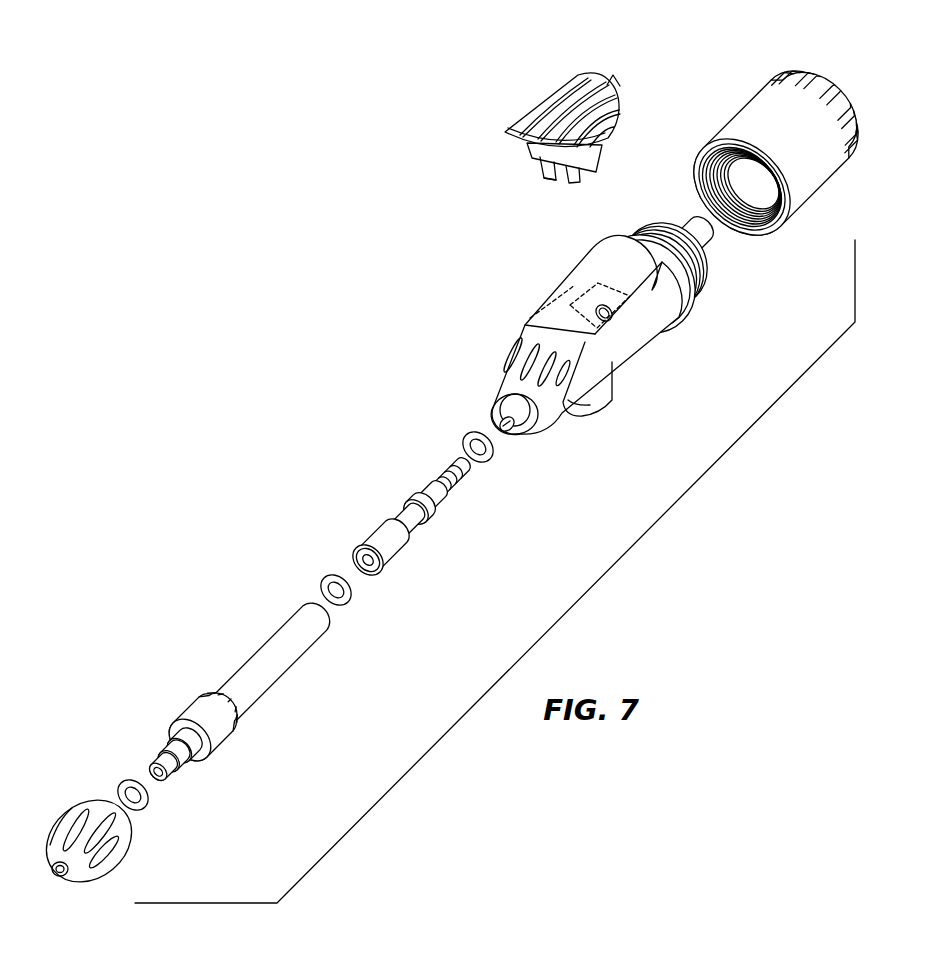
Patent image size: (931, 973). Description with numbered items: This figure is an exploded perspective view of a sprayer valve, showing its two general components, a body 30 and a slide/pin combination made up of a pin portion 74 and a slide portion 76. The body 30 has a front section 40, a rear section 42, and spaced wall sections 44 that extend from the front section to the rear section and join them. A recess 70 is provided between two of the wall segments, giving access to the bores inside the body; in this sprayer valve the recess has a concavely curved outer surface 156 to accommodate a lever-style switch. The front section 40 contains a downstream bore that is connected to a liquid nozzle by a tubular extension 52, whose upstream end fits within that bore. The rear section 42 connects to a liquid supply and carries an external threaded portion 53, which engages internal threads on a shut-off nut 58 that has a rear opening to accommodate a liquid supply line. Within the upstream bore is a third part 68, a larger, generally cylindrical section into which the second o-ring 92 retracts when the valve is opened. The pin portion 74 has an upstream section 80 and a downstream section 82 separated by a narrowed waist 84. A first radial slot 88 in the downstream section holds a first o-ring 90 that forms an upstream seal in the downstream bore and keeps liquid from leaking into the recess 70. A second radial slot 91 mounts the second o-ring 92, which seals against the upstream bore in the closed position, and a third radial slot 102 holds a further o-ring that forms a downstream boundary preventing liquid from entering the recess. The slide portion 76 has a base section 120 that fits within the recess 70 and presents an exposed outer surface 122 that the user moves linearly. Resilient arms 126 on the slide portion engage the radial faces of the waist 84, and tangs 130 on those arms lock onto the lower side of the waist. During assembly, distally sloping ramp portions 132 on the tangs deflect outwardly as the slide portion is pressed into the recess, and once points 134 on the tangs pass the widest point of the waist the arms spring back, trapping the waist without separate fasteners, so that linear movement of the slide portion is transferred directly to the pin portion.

The body 30 is at (598, 338).
The front section 40 is at (553, 422).
The rear section 42 is at (690, 308).
The spaced wall sections 44 is at (600, 325).
The tubular extension 52 is at (288, 660).
The threaded portion 53 is at (701, 272).
The shut-off nut 58 is at (803, 187).
The third part of the upstream bore 68 is at (602, 303).
The recess 70 is at (568, 318).
The pin portion 74 is at (393, 518).
The slide portion 76 is at (620, 80).
The upstream section 80 is at (405, 547).
The downstream section 82 is at (420, 492).
The narrowed waist 84 is at (401, 517).
The first radial slot 88 is at (384, 552).
The first o-ring 90 is at (353, 601).
The second radial slot 91 is at (453, 466).
The second o-ring 92 is at (513, 430).
The third radial slot 102 is at (492, 457).
The base section 120 is at (548, 98).
The exposed outer surface 122 is at (556, 86).
The resilient arms 126 is at (604, 146).
The tangs 130 is at (547, 177).
The ramp portions 132 is at (570, 186).
The points 134 is at (551, 182).
The concavely curved outer surface 156 is at (633, 239).